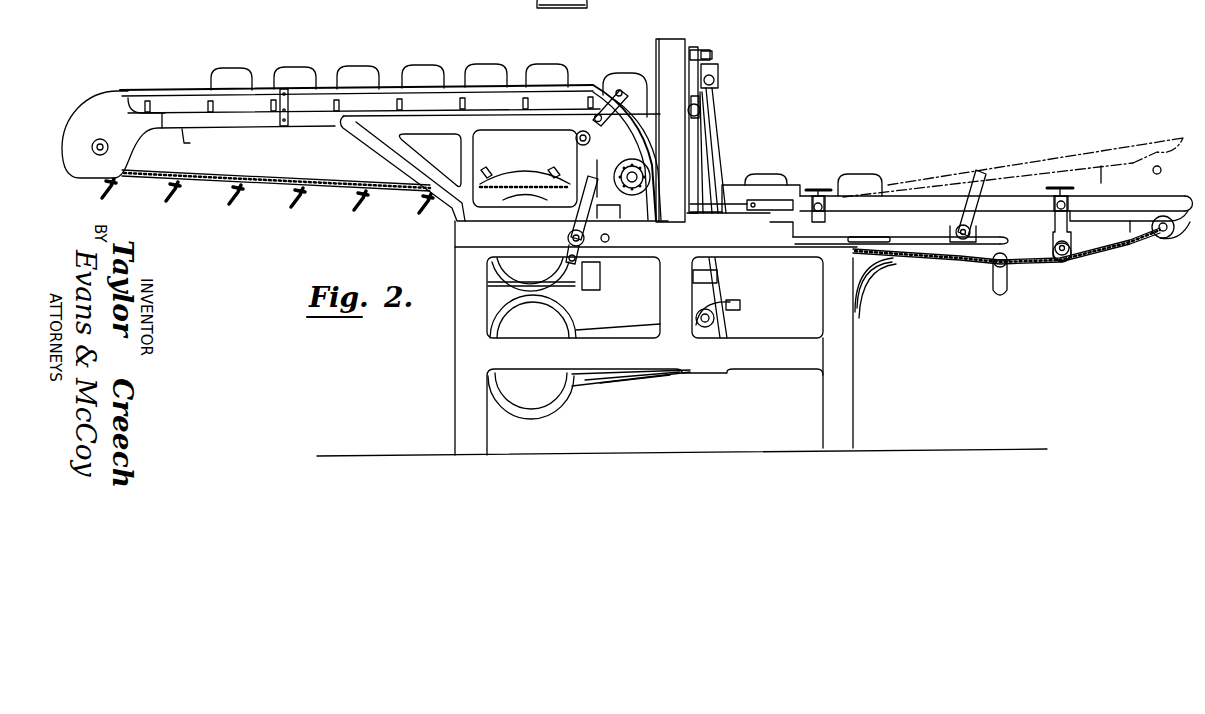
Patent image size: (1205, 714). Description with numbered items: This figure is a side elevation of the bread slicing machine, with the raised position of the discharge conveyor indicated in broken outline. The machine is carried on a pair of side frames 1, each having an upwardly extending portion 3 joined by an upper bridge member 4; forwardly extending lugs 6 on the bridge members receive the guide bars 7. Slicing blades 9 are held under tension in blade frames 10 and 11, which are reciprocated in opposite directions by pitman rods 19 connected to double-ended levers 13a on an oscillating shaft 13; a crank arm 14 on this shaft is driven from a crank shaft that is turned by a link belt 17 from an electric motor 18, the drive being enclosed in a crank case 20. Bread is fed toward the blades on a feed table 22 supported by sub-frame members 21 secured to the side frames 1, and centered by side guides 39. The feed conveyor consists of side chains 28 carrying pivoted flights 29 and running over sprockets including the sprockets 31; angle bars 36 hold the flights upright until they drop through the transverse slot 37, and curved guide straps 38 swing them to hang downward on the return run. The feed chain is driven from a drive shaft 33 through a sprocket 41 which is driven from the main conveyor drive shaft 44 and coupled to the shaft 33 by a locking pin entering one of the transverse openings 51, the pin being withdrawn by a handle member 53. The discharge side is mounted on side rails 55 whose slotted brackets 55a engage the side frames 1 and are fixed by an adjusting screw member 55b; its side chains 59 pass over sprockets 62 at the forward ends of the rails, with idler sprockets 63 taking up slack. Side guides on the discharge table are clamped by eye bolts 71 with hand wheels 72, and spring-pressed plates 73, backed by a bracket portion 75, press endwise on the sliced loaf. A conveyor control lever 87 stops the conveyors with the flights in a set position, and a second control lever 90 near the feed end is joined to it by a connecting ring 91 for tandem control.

The side frame 1 is at (855, 345).
The upwardly extending portion 3 is at (656, 55).
The upper bridge member 4 is at (672, 39).
The lug 6 is at (714, 55).
The guide bar 7 is at (695, 47).
The slicing blade 9 is at (712, 148).
The blade frame 10 is at (718, 75).
The blade frame 11 is at (689, 106).
The oscillating shaft 13 is at (697, 320).
The double-ended lever 13a is at (736, 310).
The crank arm 14 is at (184, 62).
The link belt 17 is at (490, 300).
The electric motor 18 is at (544, 272).
The pitman rod 19 is at (715, 130).
The crank case 20 is at (620, 376).
The sub-frame member 21 is at (392, 152).
The feed table 22 is at (241, 8).
The side chain 28 is at (275, 192).
The flight 29 is at (214, 202).
The sprocket 31 is at (576, 140).
The drive shaft 33 is at (605, 189).
The angle bar 36 is at (350, 6).
The transverse slot 37 is at (458, 6).
The curved guide strap 38 is at (522, 170).
The side guide 39 is at (330, 86).
The sprocket 41 is at (650, 174).
The main conveyor drive shaft 44 is at (624, 240).
The transverse opening 51 is at (622, 170).
The handle member 53 is at (648, 184).
The side rail 55 is at (1098, 211).
The slotted bracket 55a is at (1000, 296).
The adjusting screw member 55b is at (993, 266).
The side chain 59 is at (1033, 262).
The sprocket 62 is at (1162, 241).
The idler sprocket 63 is at (1072, 258).
The eye bolt 71 is at (820, 188).
The hand wheel 72 is at (830, 190).
The plate 73 is at (775, 181).
The bracket portion 75 is at (775, 212).
The conveyor control lever 87 is at (978, 171).
The control lever 90 is at (568, 232).
The connecting ring 91 is at (904, 252).